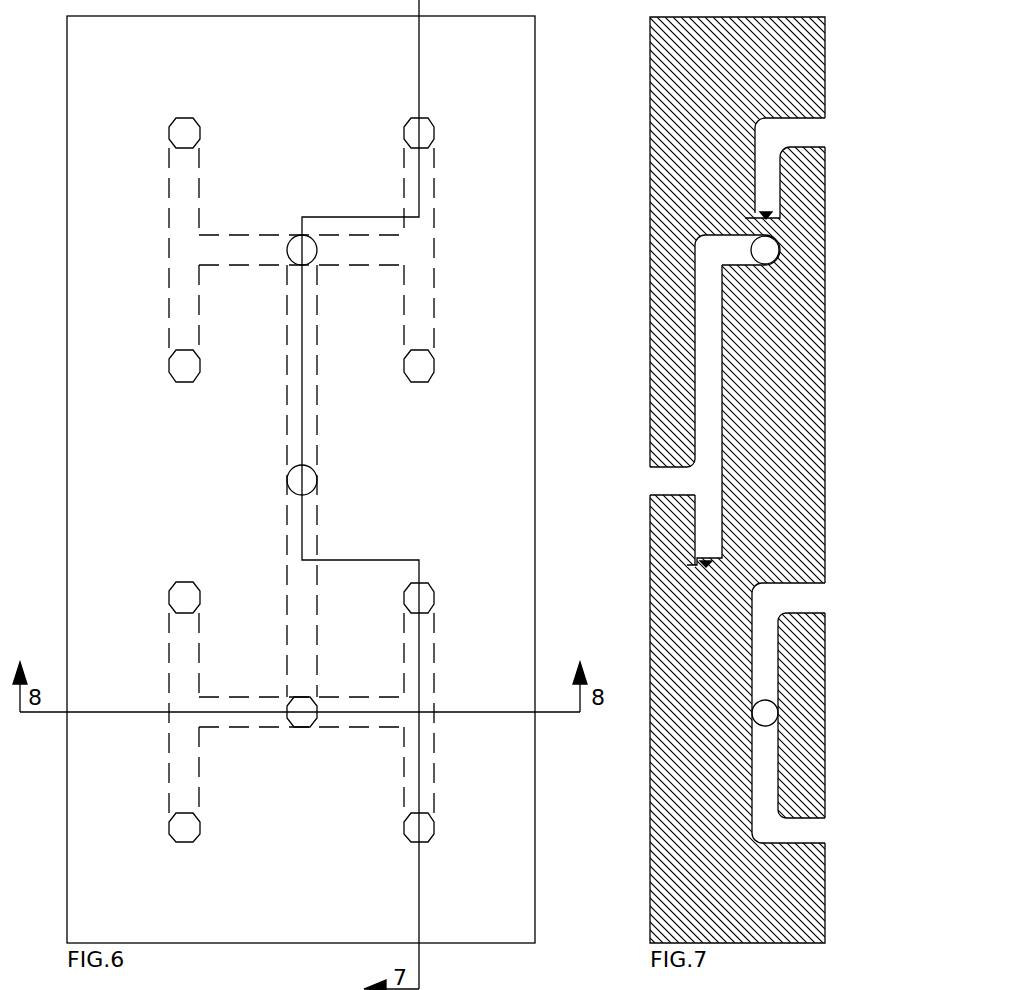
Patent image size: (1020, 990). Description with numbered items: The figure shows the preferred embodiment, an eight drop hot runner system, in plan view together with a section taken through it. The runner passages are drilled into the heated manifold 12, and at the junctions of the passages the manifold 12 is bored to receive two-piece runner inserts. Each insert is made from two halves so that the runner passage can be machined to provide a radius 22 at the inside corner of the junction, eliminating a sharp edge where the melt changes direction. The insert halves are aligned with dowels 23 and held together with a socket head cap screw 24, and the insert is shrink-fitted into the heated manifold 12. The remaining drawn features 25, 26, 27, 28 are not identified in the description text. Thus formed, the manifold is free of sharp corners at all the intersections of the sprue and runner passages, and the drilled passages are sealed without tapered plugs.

In FIG. 6, the manifold 12 is at (403, 235).
In FIG. 7, the manifold 12 is at (787, 133).
In FIG. 6, the radius 22 is at (301, 466).
In FIG. 7, the radius 22 is at (718, 483).
In FIG. 6, the dowels 23 is at (307, 475).
In FIG. 7, the dowels 23 is at (652, 470).
In FIG. 6, the socket head cap screw 24 is at (308, 258).
In FIG. 7, the socket head cap screw 24 is at (755, 270).
In FIG. 7, the connecting channel 25 is at (712, 258).
In FIG. 6, the ball 26 is at (247, 258).
In FIG. 7, the ball 26 is at (768, 710).
In FIG. 6, the upper track wall 27 is at (403, 249).
In FIG. 6, the side track 28 is at (413, 320).
In FIG. 7, the side track 28 is at (762, 753).